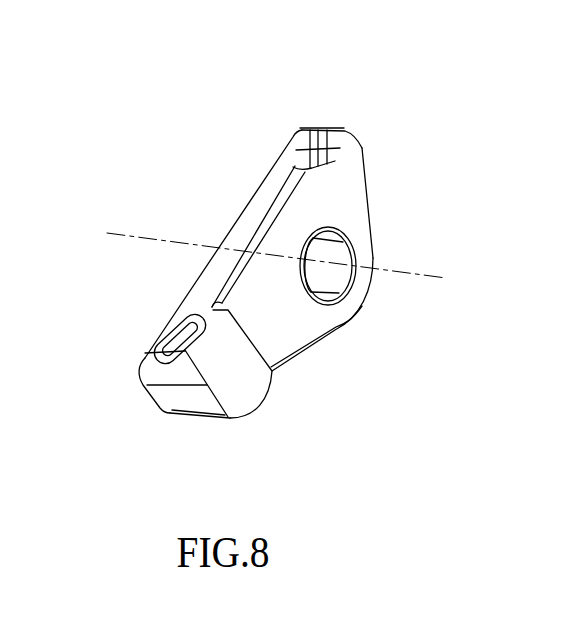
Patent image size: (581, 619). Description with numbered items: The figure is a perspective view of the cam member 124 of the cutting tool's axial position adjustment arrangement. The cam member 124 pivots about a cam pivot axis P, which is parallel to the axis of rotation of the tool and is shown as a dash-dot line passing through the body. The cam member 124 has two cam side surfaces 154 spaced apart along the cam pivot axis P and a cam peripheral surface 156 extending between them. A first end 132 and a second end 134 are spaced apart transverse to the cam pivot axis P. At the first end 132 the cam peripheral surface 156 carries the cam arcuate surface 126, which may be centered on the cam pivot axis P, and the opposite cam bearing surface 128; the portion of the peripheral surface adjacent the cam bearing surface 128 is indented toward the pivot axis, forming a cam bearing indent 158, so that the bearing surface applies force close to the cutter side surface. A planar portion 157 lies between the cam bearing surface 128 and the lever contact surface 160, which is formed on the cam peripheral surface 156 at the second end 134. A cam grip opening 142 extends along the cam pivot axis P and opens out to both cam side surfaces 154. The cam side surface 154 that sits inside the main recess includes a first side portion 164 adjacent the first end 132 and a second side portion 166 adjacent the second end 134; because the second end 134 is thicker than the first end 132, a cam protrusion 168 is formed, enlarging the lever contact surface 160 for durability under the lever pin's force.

The cam member 124 is at (197, 155).
The cam arcuate surface 126 is at (364, 307).
The cam bearing surface 128 is at (292, 151).
The first end 132 is at (324, 100).
The second end 134 is at (129, 390).
The cam grip opening 142 is at (346, 255).
The cam side surfaces 154 is at (297, 318).
The cam peripheral surface 156 is at (198, 295).
The planar portion 157 is at (258, 207).
The cam bearing indent 158 is at (327, 133).
The lever contact surface 160 is at (148, 387).
The first side portion 164 is at (340, 192).
The second side portion 166 is at (223, 393).
The cam protrusion 168 is at (248, 390).
The cam pivot axis P is at (260, 246).